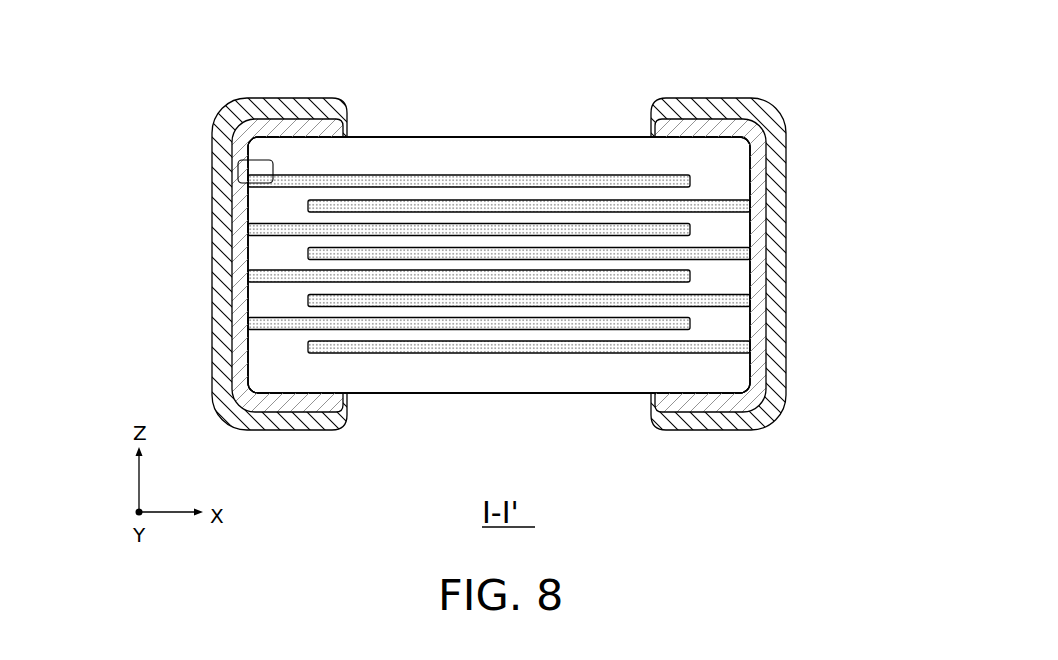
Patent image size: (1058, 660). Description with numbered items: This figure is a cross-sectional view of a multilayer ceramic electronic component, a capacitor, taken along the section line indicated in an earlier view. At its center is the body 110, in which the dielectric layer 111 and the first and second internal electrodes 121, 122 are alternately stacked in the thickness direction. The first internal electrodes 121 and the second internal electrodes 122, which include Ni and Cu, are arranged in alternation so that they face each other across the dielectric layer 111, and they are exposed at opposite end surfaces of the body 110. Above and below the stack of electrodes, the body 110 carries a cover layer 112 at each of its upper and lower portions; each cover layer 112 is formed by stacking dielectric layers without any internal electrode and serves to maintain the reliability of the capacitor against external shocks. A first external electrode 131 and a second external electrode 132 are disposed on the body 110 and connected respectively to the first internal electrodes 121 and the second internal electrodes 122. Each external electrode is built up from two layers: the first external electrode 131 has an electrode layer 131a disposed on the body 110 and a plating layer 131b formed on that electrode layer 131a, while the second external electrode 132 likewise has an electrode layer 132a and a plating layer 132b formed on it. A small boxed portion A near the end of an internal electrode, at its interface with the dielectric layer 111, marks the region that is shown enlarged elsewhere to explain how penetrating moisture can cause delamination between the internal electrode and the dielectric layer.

The body 110 is at (427, 138).
The dielectric layer 111 is at (377, 218).
The cover layer 112 is at (501, 150).
The first internal electrode 121 is at (573, 177).
The second internal electrode 122 is at (636, 200).
The first external electrode 131 is at (202, 264).
The electrode layer 131a is at (240, 187).
The plating layer 131b is at (222, 216).
The second external electrode 132 is at (796, 264).
The electrode layer 132a is at (760, 167).
The plating layer 132b is at (782, 192).
The portion A is at (266, 160).